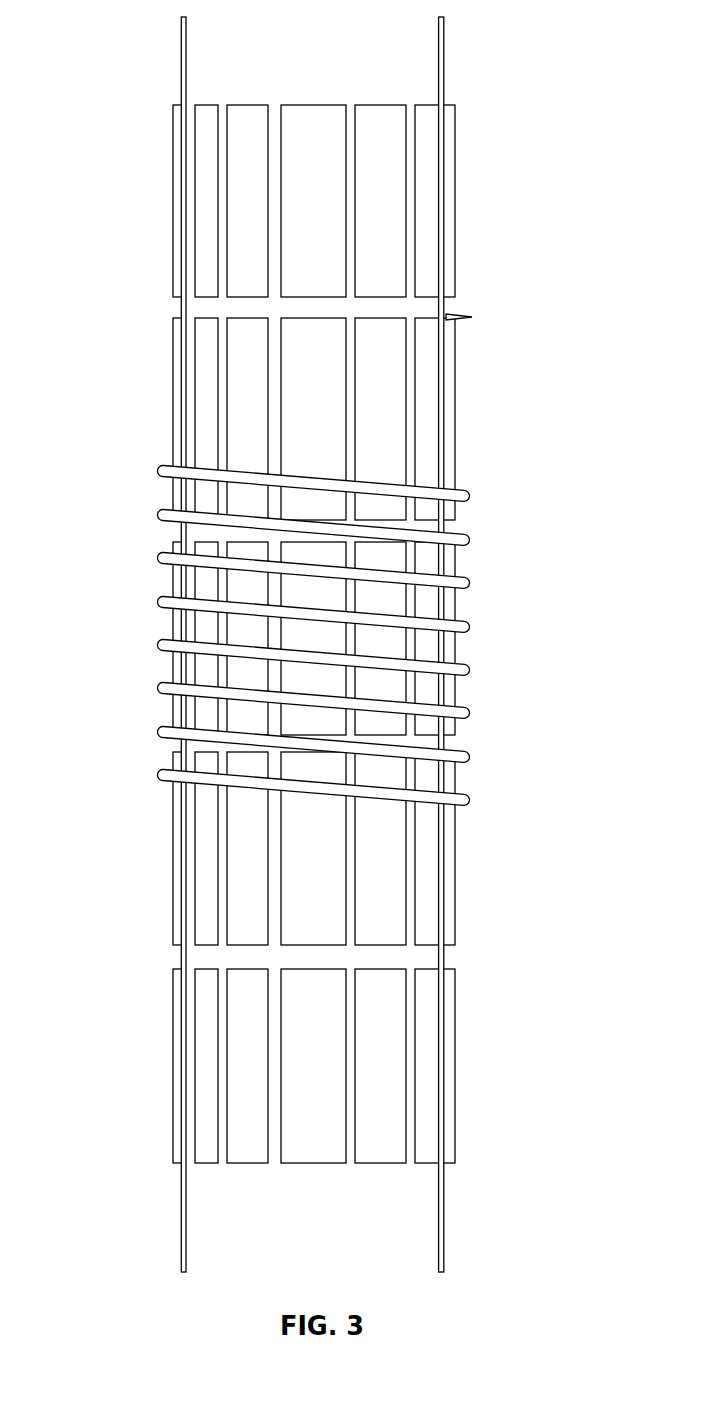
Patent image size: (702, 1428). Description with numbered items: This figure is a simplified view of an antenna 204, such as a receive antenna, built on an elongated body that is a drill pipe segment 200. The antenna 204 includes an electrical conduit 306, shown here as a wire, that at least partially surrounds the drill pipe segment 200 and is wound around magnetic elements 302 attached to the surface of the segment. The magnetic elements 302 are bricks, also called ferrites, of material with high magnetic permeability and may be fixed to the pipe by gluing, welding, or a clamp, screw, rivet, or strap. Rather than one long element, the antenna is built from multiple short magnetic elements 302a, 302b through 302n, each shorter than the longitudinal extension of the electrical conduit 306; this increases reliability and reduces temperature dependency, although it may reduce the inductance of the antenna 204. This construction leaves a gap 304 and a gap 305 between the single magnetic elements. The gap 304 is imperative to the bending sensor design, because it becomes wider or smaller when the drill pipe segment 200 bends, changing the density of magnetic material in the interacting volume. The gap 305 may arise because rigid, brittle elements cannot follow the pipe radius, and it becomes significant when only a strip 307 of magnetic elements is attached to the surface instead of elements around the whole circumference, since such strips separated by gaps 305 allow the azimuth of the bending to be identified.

The drill pipe segment 200 is at (181, 76).
The receive antenna 204 is at (254, 642).
The magnetic elements 302 is at (374, 633).
The first short magnetic element 302a is at (472, 200).
The second short magnetic element 302b is at (456, 417).
The nth short magnetic element 302n is at (457, 1063).
The gap 304 is at (448, 307).
The gap 305 is at (410, 1165).
The electrical conduit 306 is at (158, 557).
The strip 307 is at (281, 90).